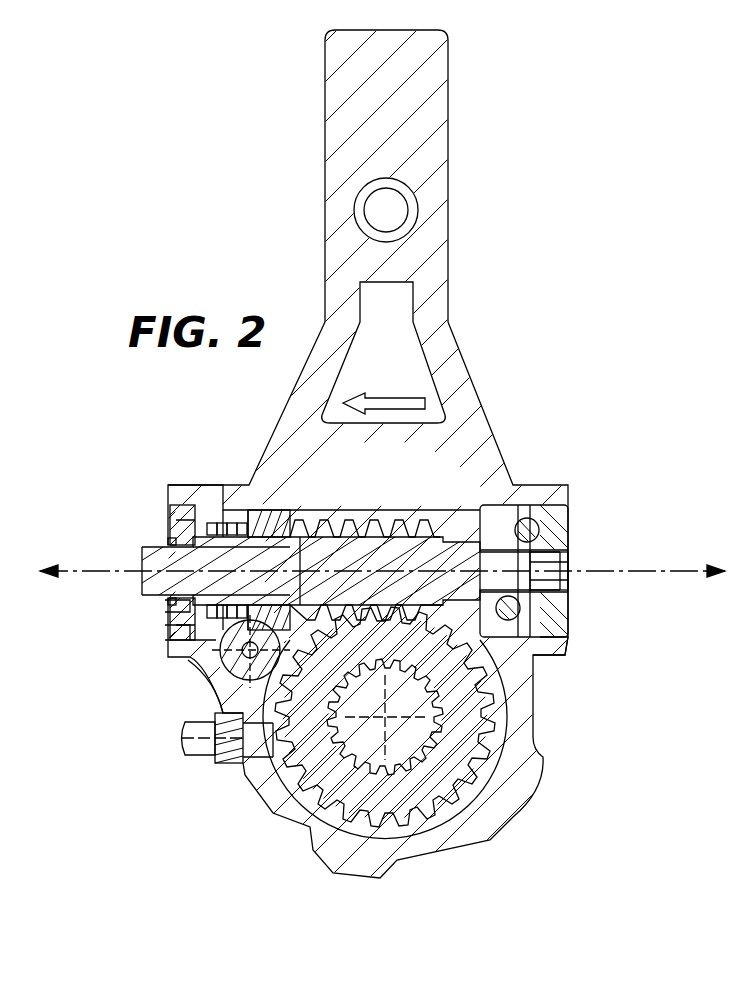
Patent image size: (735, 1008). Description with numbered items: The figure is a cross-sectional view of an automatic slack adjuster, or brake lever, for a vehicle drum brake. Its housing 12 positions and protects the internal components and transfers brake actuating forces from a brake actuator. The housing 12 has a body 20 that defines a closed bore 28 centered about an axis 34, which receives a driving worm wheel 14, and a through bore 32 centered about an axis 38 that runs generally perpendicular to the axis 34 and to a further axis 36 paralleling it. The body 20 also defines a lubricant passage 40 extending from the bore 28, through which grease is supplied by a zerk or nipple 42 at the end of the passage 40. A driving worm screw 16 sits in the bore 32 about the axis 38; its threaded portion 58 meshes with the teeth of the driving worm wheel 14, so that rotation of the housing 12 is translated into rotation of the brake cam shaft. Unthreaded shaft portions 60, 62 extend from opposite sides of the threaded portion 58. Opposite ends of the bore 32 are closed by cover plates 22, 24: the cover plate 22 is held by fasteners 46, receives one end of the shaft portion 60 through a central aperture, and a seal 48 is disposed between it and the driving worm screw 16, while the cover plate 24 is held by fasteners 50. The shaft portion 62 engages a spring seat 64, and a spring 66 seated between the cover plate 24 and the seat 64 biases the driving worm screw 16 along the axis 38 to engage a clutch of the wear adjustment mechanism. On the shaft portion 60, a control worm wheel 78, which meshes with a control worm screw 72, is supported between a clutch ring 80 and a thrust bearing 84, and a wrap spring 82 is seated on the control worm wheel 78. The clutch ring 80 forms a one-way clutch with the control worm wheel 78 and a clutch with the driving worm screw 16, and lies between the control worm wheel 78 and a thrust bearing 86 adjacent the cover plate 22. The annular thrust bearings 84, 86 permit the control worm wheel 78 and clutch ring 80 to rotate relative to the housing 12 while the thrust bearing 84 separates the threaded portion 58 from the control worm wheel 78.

The housing 12 is at (428, 838).
The driving worm wheel 14 is at (473, 727).
The driving worm screw 16 is at (405, 512).
The body 20 is at (338, 262).
The cover plate 22 is at (172, 518).
The cover plate 24 is at (567, 520).
The bore 28 is at (415, 775).
The bore 32 is at (365, 520).
The axis 34 is at (387, 718).
The axis 36 is at (228, 655).
The axis 38 is at (672, 573).
The lubricant passage 40 is at (257, 745).
The zerk or nipple 42 is at (203, 760).
The fasteners 46 is at (165, 632).
The seal 48 is at (168, 606).
The fasteners 50 is at (570, 638).
The threaded portion 58 is at (330, 545).
The shaft portion 60 is at (180, 522).
The shaft portion 62 is at (505, 550).
The spring seat 64 is at (492, 512).
The spring 66 is at (540, 607).
The control worm screw 72 is at (240, 680).
The control worm wheel 78 is at (262, 530).
The clutch ring 80 is at (213, 555).
The wrap spring 82 is at (218, 518).
The thrust bearing 84 is at (298, 512).
The thrust bearing 86 is at (170, 540).